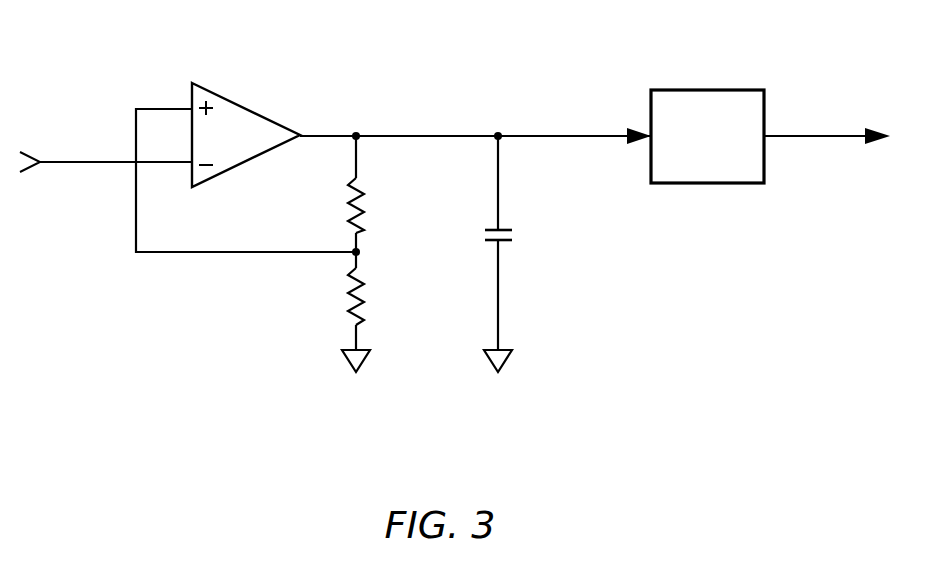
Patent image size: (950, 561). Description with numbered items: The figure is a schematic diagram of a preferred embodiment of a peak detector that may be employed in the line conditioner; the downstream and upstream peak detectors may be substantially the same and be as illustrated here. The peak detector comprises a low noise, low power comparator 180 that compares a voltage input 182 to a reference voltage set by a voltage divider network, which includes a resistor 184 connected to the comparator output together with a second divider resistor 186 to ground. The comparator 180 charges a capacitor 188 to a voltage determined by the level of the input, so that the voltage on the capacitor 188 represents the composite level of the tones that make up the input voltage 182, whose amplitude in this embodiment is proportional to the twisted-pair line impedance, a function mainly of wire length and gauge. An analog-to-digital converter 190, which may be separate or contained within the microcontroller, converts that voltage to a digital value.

The comparator 180 is at (266, 119).
The voltage input 182 is at (106, 138).
The resistor 184 is at (395, 194).
The resistor to ground 186 is at (312, 312).
The capacitor 188 is at (538, 254).
The analog-to-digital converter 190 is at (770, 109).